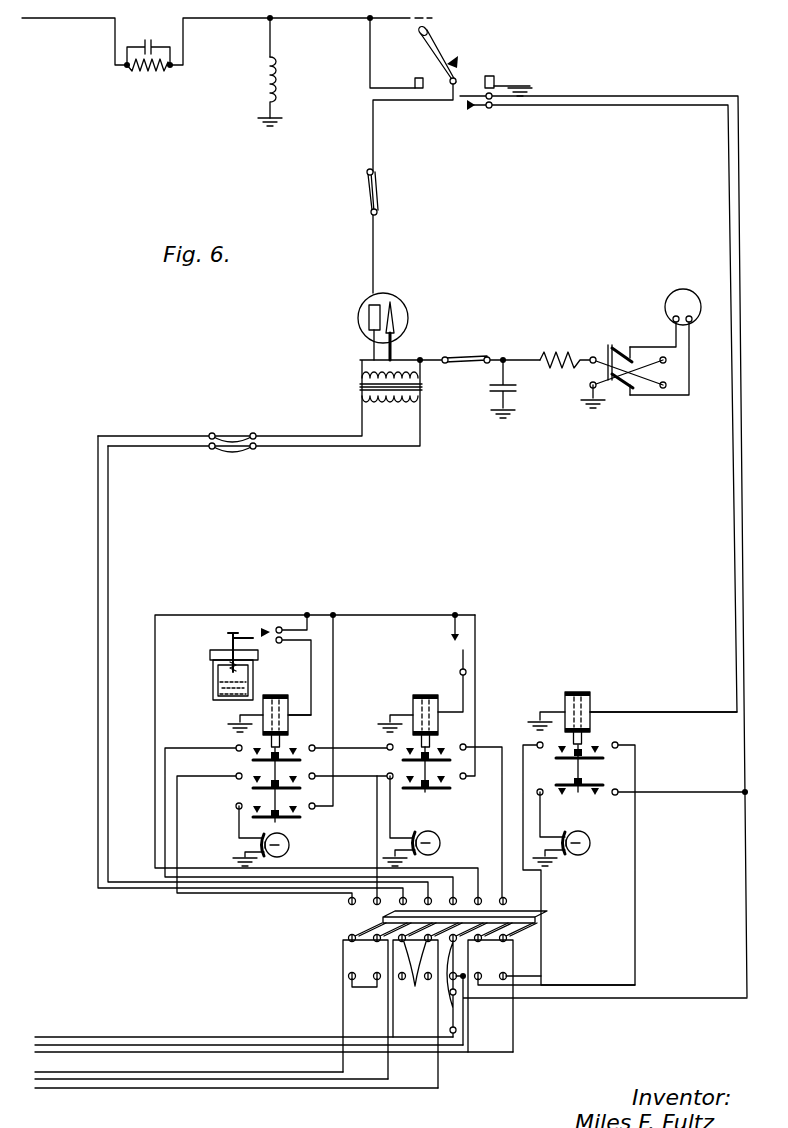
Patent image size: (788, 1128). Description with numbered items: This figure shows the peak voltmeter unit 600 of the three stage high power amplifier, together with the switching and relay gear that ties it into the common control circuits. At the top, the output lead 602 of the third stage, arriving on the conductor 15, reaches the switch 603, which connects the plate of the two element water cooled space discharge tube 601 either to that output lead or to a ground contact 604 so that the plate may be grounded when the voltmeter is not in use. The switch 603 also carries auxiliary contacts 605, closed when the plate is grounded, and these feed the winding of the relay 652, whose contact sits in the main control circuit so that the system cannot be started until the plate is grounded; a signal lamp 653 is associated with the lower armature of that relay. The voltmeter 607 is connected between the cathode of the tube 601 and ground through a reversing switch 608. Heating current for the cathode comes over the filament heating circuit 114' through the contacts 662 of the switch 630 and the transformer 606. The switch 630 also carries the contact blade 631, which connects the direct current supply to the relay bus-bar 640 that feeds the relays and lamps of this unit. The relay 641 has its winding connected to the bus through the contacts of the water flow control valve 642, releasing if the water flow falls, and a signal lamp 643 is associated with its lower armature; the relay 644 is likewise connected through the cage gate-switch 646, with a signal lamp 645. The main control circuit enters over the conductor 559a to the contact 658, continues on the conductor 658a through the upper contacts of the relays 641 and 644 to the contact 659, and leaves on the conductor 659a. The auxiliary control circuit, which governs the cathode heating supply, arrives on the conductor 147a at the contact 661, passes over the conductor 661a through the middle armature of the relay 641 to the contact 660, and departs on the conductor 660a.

The conductor 15 is at (77, 20).
The peak voltmeter circuit 600 is at (536, 270).
The two element water cooled space discharge tube 601 is at (403, 318).
The output lead 602 is at (302, 20).
The switch 603 is at (440, 50).
The ground contact 604 is at (494, 77).
The auxiliary contacts 605 is at (462, 105).
The transformer 606 is at (360, 388).
The voltmeter 607 is at (666, 316).
The reversing switch 608 is at (620, 398).
The switch 630 is at (538, 920).
The contact blade 631 is at (458, 1012).
The bus-bar 640 is at (375, 615).
The relay 641 is at (277, 684).
The water flow control valve 642 is at (215, 677).
The signal lamp 643 is at (290, 845).
The relay 644 is at (424, 686).
The signal lamp 645 is at (441, 843).
The cage gate-switch 646 is at (460, 653).
The relay 652 is at (572, 686).
The signal lamp 653 is at (591, 843).
The contact 658 is at (480, 942).
The conductor 658a is at (180, 746).
The contact 659 is at (505, 946).
The conductor 659a is at (513, 1012).
The contact 660 is at (374, 943).
The conductor 660a is at (192, 1080).
The contact 661 is at (350, 946).
The conductor 661a is at (215, 886).
The contacts 662 is at (417, 1014).
The filament heating current circuit 114' is at (274, 1004).
The conductor 147a is at (132, 1074).
The conductor 559a is at (470, 1053).